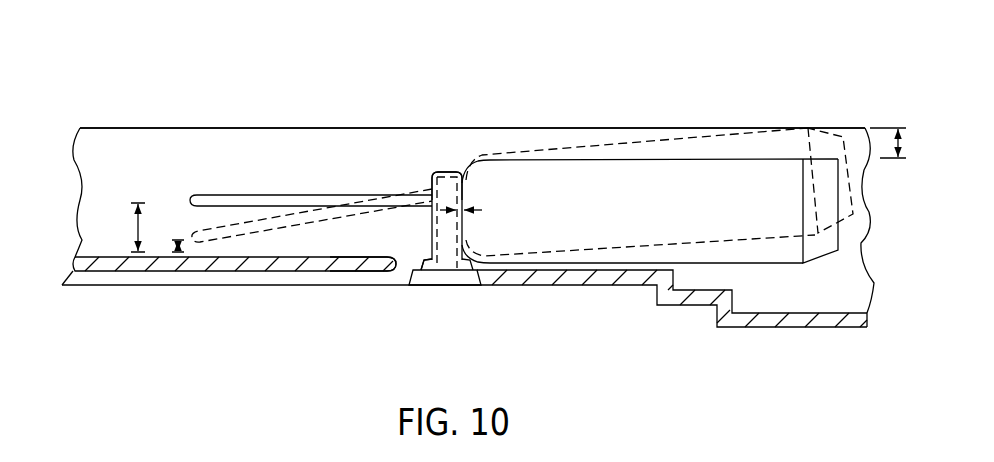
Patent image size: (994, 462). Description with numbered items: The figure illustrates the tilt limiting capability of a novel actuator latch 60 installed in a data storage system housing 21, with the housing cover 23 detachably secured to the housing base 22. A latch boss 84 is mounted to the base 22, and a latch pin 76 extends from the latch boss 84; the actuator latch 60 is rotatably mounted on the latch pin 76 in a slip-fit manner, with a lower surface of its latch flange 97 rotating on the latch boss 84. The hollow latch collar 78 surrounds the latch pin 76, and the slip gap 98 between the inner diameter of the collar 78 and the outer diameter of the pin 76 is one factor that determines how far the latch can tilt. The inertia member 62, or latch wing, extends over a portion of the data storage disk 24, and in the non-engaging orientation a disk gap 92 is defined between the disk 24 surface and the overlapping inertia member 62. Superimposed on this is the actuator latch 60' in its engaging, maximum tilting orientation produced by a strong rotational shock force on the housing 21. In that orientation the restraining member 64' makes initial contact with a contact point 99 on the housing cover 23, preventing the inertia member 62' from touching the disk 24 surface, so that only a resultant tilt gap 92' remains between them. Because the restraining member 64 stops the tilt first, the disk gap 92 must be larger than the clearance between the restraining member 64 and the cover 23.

The data storage system housing 21 is at (79, 126).
The housing base 22 is at (236, 287).
The housing cover 23 is at (172, 127).
The data storage disk 24 is at (345, 250).
The actuator latch 60 is at (650, 172).
The actuator latch in engaging orientation 60' is at (640, 168).
The inertia member 62 is at (311, 182).
The inertia member in tilted orientation 62' is at (312, 199).
The restraining member 64 is at (769, 172).
The restraining member in tilted orientation 64' is at (740, 157).
The latch pin 76 is at (441, 256).
The hollow latch collar 78 is at (440, 171).
The latch boss 84 is at (411, 280).
The disk gap 92 is at (120, 215).
The resultant tilt gap 92' is at (238, 251).
The latch flange 97 is at (425, 265).
The slip gap 98 is at (467, 202).
The contact point 99 is at (808, 126).